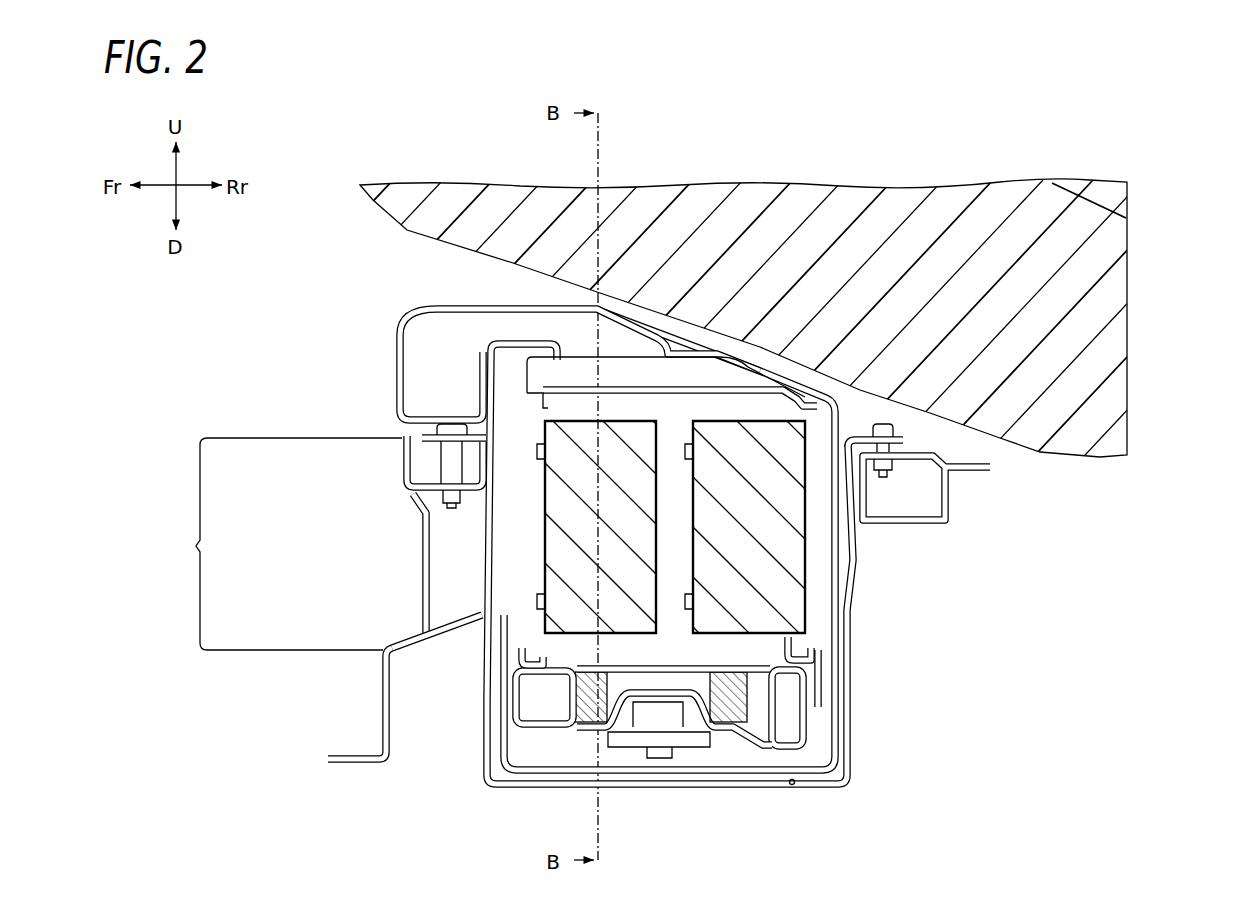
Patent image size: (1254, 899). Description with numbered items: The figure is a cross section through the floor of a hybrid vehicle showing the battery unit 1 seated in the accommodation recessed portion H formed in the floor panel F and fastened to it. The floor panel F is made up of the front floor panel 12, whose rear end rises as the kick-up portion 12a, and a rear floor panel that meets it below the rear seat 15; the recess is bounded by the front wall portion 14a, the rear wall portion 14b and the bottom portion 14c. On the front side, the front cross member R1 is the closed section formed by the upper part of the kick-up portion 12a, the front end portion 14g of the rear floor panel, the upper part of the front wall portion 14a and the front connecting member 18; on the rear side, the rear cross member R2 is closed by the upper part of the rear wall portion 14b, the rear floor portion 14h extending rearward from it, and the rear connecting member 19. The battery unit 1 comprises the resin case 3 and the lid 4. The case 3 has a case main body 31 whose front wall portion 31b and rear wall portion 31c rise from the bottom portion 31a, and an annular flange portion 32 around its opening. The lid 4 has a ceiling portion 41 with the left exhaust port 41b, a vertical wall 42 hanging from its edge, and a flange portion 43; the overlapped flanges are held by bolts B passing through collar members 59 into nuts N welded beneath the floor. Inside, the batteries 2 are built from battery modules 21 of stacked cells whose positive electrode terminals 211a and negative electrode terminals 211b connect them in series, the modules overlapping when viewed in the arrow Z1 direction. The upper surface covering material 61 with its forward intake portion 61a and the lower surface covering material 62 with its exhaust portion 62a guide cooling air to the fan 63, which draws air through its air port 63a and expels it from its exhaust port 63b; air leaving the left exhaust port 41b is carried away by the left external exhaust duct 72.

The battery unit 1 is at (485, 781).
The battery 2 is at (576, 647).
The case 3 is at (732, 701).
The case main body 31 is at (839, 722).
The bottom portion 31a is at (630, 774).
The front wall portion 31b is at (504, 737).
The rear wall portion 31c is at (839, 667).
The flange portion 32 is at (862, 400).
The lid 4 is at (666, 250).
The ceiling portion 41 is at (765, 400).
The left exhaust port 41b is at (640, 338).
The vertical wall 42 is at (515, 407).
The flange portion 43 is at (901, 430).
The front floor panel 12 is at (338, 753).
The kick-up portion 12a is at (423, 614).
The front wall portion 14a is at (484, 718).
The rear wall portion 14b is at (853, 695).
The bottom portion 14c is at (840, 788).
The front end portion 14g is at (430, 488).
The rear floor portion 14h is at (906, 441).
The rear seat 15 is at (815, 186).
The front connecting member 18 is at (431, 639).
The rear connecting member 19 is at (903, 524).
The battery module 21 is at (730, 433).
The positive electrode terminal 211a is at (547, 547).
The negative electrode terminal 211b is at (720, 604).
The collar member 59 is at (446, 462).
The upper surface covering material 61 is at (780, 383).
The intake portion 61a is at (527, 380).
The lower surface covering material 62 is at (802, 650).
The exhaust portion 62a is at (843, 617).
The fan 63 is at (739, 748).
The air port 63a is at (693, 731).
The exhaust port 63b is at (800, 735).
The left external exhaust duct 72 is at (436, 307).
The bolt B is at (450, 423).
The nut N is at (452, 503).
The floor panel F is at (348, 767).
The accommodation recessed portion H is at (795, 786).
The front cross member R1 is at (279, 544).
The rear cross member R2 is at (952, 513).
The arrow Z1 direction Z1 is at (254, 374).